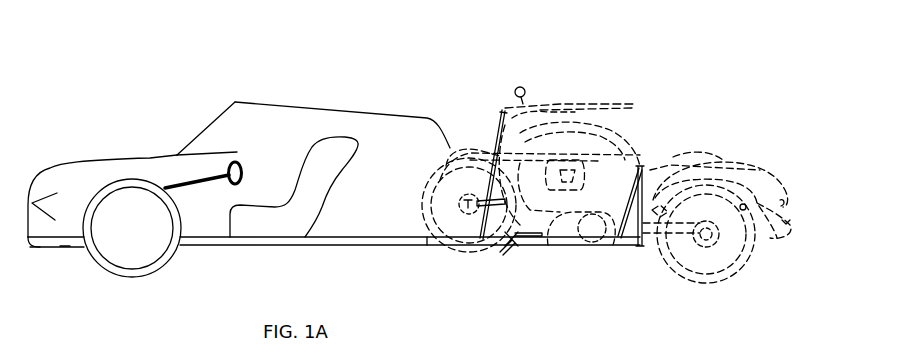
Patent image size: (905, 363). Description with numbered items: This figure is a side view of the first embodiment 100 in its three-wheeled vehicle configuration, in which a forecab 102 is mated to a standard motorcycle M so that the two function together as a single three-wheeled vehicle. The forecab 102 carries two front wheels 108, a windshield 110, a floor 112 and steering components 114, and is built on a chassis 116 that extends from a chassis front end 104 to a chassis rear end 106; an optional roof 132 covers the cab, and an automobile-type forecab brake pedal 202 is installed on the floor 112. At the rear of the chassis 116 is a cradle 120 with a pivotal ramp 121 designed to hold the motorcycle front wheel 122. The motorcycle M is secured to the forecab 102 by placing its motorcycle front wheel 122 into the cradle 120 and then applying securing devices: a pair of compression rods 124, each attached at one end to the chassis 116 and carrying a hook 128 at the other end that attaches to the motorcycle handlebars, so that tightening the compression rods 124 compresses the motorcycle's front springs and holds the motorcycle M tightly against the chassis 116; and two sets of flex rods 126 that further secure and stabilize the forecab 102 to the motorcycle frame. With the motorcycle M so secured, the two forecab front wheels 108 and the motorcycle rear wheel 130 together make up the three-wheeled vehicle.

The first embodiment 100 is at (419, 54).
The forecab 102 is at (83, 117).
The chassis front end 104 is at (48, 256).
The chassis rear end 106 is at (623, 247).
The front wheels 108 is at (140, 278).
The windshield 110 is at (208, 120).
The floor 112 is at (214, 237).
The steering components 114 is at (195, 177).
The chassis 116 is at (359, 247).
The cradle 120 is at (432, 244).
The pivotal ramp 121 is at (546, 237).
The motorcycle front wheel 122 is at (420, 194).
The compression rods 124 is at (487, 222).
The flex rods 126 is at (640, 242).
The hook 128 is at (547, 110).
The motorcycle rear wheel 130 is at (752, 255).
The roof 132 is at (353, 107).
The forecab brake pedal 202 is at (720, 241).
The motorcycle M is at (745, 130).